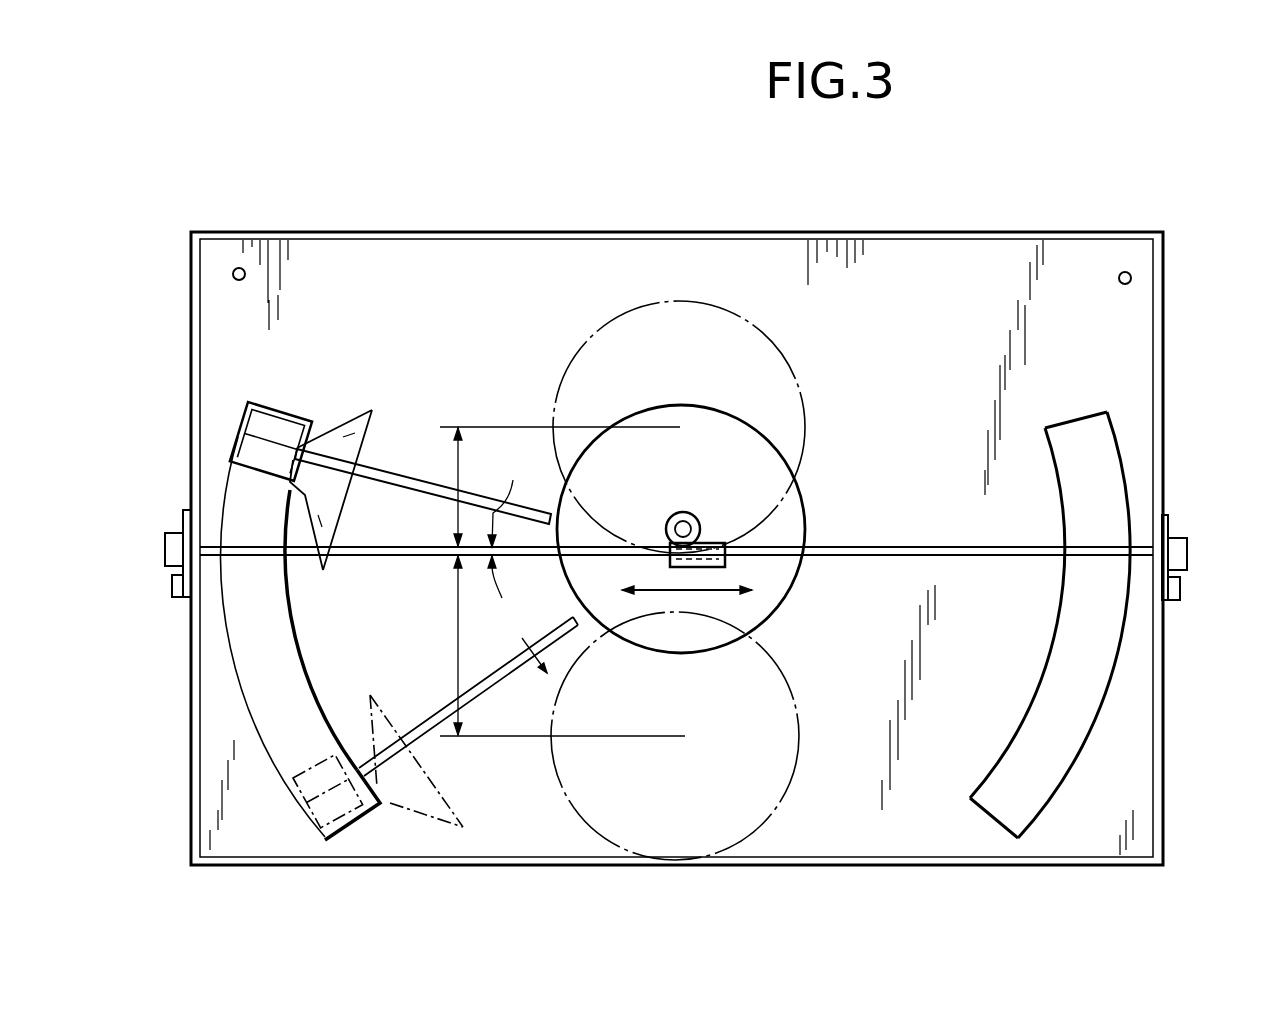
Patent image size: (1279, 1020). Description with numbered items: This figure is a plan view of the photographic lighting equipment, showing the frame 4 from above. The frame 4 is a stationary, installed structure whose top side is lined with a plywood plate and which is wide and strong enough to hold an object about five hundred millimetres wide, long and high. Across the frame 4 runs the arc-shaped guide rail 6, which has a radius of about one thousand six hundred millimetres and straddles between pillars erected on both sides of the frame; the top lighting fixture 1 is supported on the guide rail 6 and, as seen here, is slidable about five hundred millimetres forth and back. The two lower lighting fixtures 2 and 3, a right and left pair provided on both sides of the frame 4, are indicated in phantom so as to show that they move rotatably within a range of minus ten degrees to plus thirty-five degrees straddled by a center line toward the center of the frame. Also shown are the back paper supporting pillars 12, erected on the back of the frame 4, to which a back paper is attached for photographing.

The top lighting fixture 1 is at (809, 492).
The lower lighting fixture 2 is at (1016, 716).
The lower lighting fixture 3 is at (367, 408).
The frame 4 is at (933, 233).
The arc-shaped guide rail 6 is at (876, 562).
The back paper supporting pillars 12 is at (240, 268).